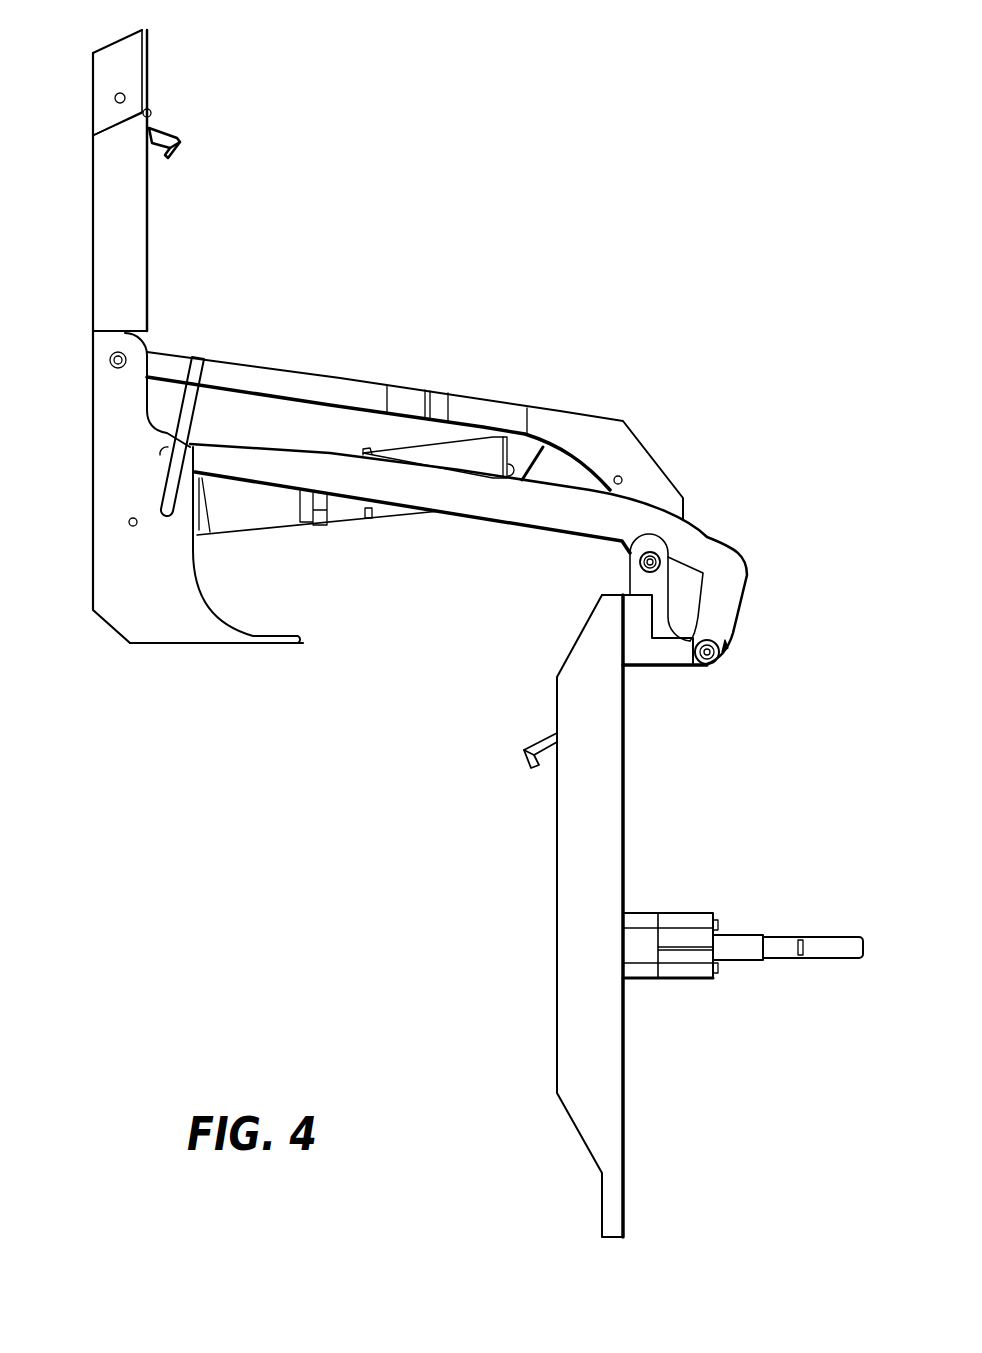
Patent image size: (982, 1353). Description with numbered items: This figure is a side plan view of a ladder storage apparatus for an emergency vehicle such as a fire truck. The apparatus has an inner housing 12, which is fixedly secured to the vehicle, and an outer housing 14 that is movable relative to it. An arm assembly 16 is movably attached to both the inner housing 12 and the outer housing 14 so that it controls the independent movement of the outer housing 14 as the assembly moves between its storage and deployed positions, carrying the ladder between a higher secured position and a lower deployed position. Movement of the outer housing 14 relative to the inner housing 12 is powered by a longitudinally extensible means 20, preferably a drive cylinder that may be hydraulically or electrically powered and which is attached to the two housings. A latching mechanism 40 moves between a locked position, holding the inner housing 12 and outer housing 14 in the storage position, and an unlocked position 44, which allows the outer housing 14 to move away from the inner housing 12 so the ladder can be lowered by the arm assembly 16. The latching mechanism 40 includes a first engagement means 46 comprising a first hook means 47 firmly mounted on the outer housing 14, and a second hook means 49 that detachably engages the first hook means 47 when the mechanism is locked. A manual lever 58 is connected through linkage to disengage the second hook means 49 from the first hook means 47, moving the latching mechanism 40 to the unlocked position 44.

The inner housing 12 is at (103, 222).
The outer housing 14 is at (613, 790).
The arm assembly 16 is at (277, 457).
The longitudinally extensible means 20 is at (352, 523).
The latching mechanism 40 is at (150, 112).
The unlocked position 44 is at (166, 160).
The first engagement means 46 is at (532, 747).
The first hook means 47 is at (548, 757).
The second hook means 49 is at (173, 132).
The manual lever 58 is at (193, 357).